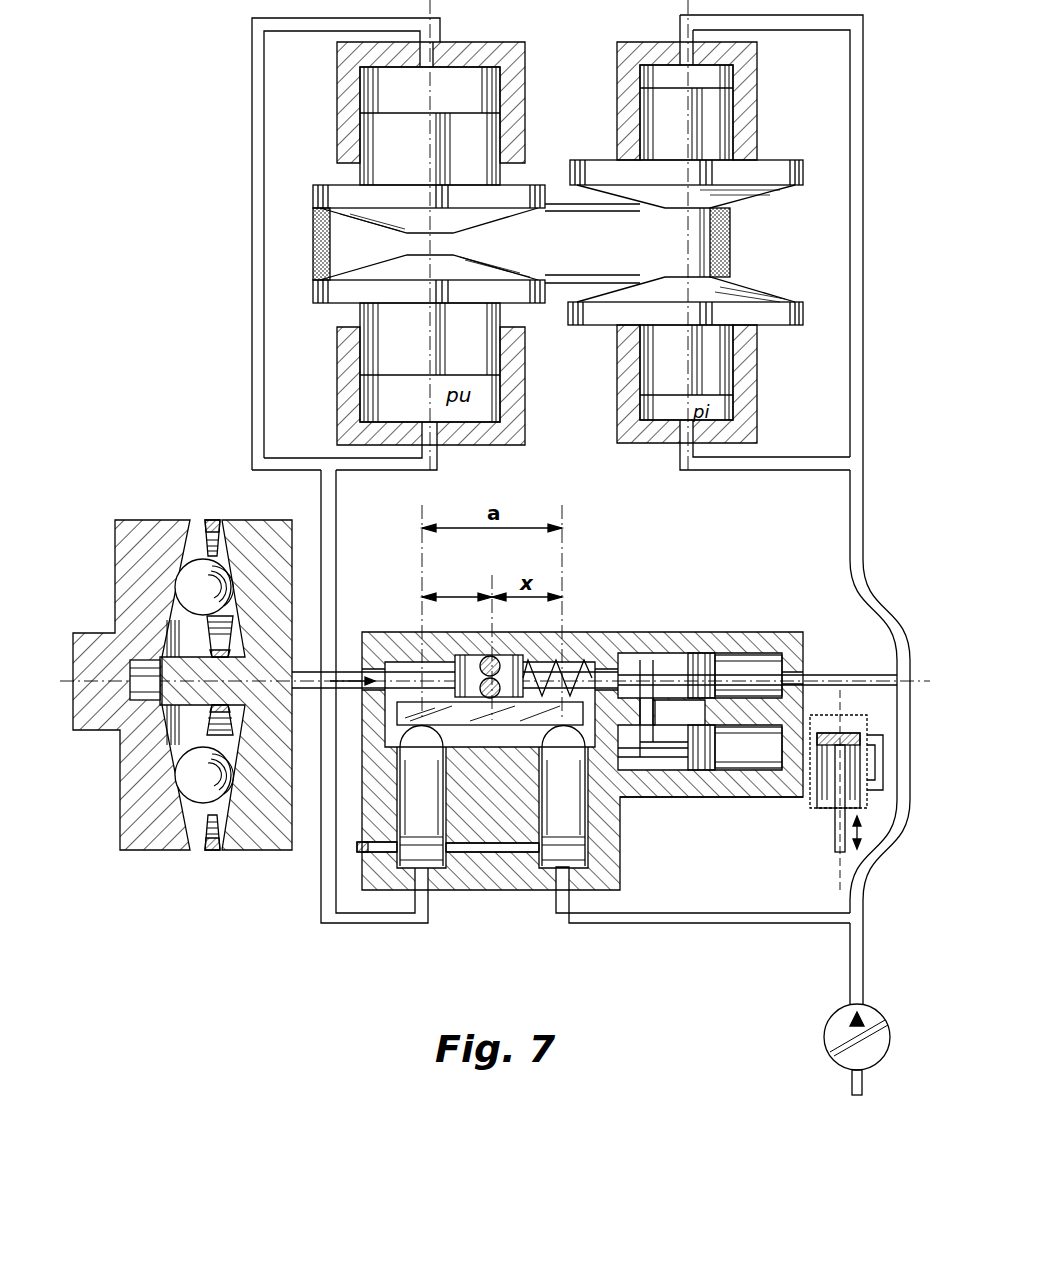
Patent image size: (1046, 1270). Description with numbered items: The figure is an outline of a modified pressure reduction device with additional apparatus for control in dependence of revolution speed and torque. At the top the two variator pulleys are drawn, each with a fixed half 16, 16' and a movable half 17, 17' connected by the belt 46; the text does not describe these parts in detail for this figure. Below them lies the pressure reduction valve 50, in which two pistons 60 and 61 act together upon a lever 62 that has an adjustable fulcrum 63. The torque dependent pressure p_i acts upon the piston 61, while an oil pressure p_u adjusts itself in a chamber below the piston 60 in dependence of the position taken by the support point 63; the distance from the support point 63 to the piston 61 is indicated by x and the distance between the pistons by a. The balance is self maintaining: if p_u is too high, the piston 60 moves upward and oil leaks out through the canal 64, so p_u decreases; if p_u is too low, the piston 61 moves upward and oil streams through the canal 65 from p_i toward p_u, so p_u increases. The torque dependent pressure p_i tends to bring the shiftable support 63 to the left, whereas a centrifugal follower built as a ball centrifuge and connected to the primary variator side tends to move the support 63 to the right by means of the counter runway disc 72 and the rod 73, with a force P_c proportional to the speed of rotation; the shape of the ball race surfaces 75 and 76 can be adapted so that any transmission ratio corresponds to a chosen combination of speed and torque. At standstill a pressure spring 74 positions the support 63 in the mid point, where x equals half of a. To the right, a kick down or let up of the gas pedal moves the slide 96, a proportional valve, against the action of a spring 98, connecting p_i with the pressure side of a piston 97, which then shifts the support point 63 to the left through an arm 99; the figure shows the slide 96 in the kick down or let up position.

The fixed half of driven pulley 16 is at (699, 295).
The fixed half of driving pulley 16' is at (415, 300).
The movable half of driven pulley 17 is at (696, 193).
The movable half of driving pulley 17' is at (416, 187).
The belt 46 is at (320, 245).
The pressure reduction valve 50 is at (630, 622).
The piston 60 is at (410, 793).
The piston 61 is at (548, 808).
The lever 62 is at (457, 714).
The adjustable fulcrum 63 is at (470, 655).
The canal 64 is at (377, 855).
The canal 65 is at (472, 853).
The counter runway disc 72 is at (252, 540).
The rod 73 is at (345, 667).
The pressure spring 74 is at (578, 662).
The ball race surface 75 is at (212, 520).
The ball race surface 76 is at (197, 537).
The slide 96 is at (790, 797).
The piston 97 is at (706, 772).
The spring 98 is at (843, 733).
The arm 99 is at (650, 758).